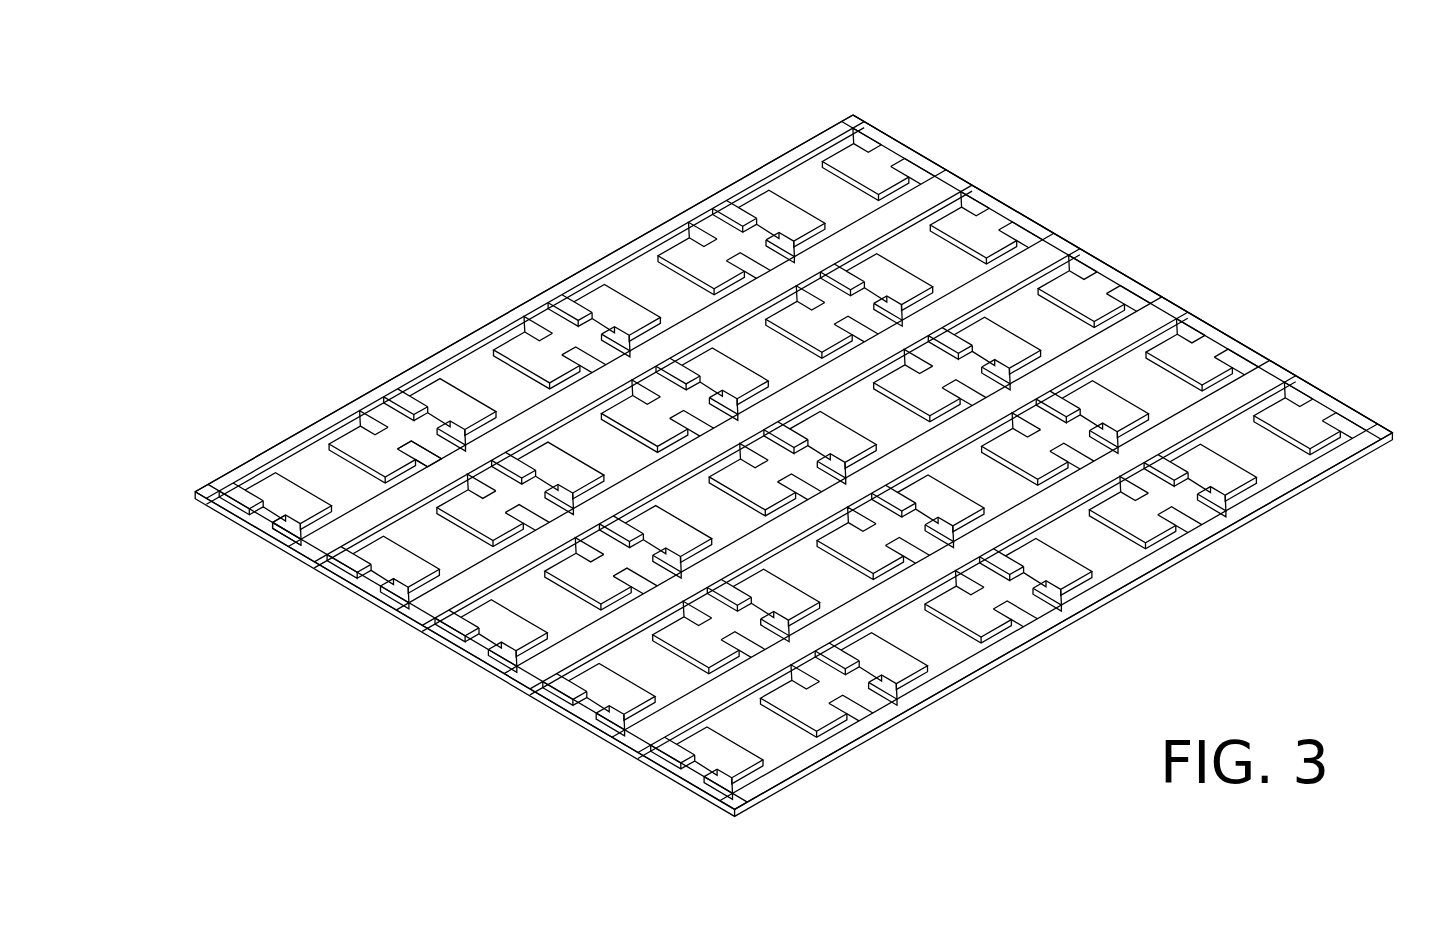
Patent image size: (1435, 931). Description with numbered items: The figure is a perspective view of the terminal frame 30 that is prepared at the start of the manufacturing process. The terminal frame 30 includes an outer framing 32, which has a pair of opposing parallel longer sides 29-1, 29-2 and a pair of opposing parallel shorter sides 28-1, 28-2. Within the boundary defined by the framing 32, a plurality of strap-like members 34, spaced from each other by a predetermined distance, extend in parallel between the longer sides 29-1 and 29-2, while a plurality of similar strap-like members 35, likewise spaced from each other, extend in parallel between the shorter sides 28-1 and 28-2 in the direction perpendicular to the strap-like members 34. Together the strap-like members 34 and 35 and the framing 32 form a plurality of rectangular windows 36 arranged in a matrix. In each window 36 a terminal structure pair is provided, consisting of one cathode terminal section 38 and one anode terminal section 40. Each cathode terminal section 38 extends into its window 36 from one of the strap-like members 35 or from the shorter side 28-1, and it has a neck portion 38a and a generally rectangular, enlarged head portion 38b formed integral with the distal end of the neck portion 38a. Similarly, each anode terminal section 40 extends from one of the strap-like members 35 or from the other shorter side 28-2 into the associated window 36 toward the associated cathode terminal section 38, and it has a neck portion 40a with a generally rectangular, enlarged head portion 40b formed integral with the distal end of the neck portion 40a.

The shorter side 28-1 is at (866, 131).
The shorter side 28-2 is at (487, 665).
The longer side 29-1 is at (868, 740).
The longer side 29-2 is at (760, 168).
The terminal frame 30 is at (1195, 241).
The outer framing 32 is at (977, 192).
The strap-like members 34 is at (935, 192).
The strap-like members 35 is at (1233, 525).
The rectangular windows 36 is at (1107, 553).
The cathode terminal section 38 is at (1313, 417).
The neck portion 38a is at (395, 447).
The enlarged head portion 38b is at (355, 452).
The anode terminal section 40 is at (1238, 486).
The neck portion 40a is at (267, 518).
The enlarged head portion 40b is at (280, 490).